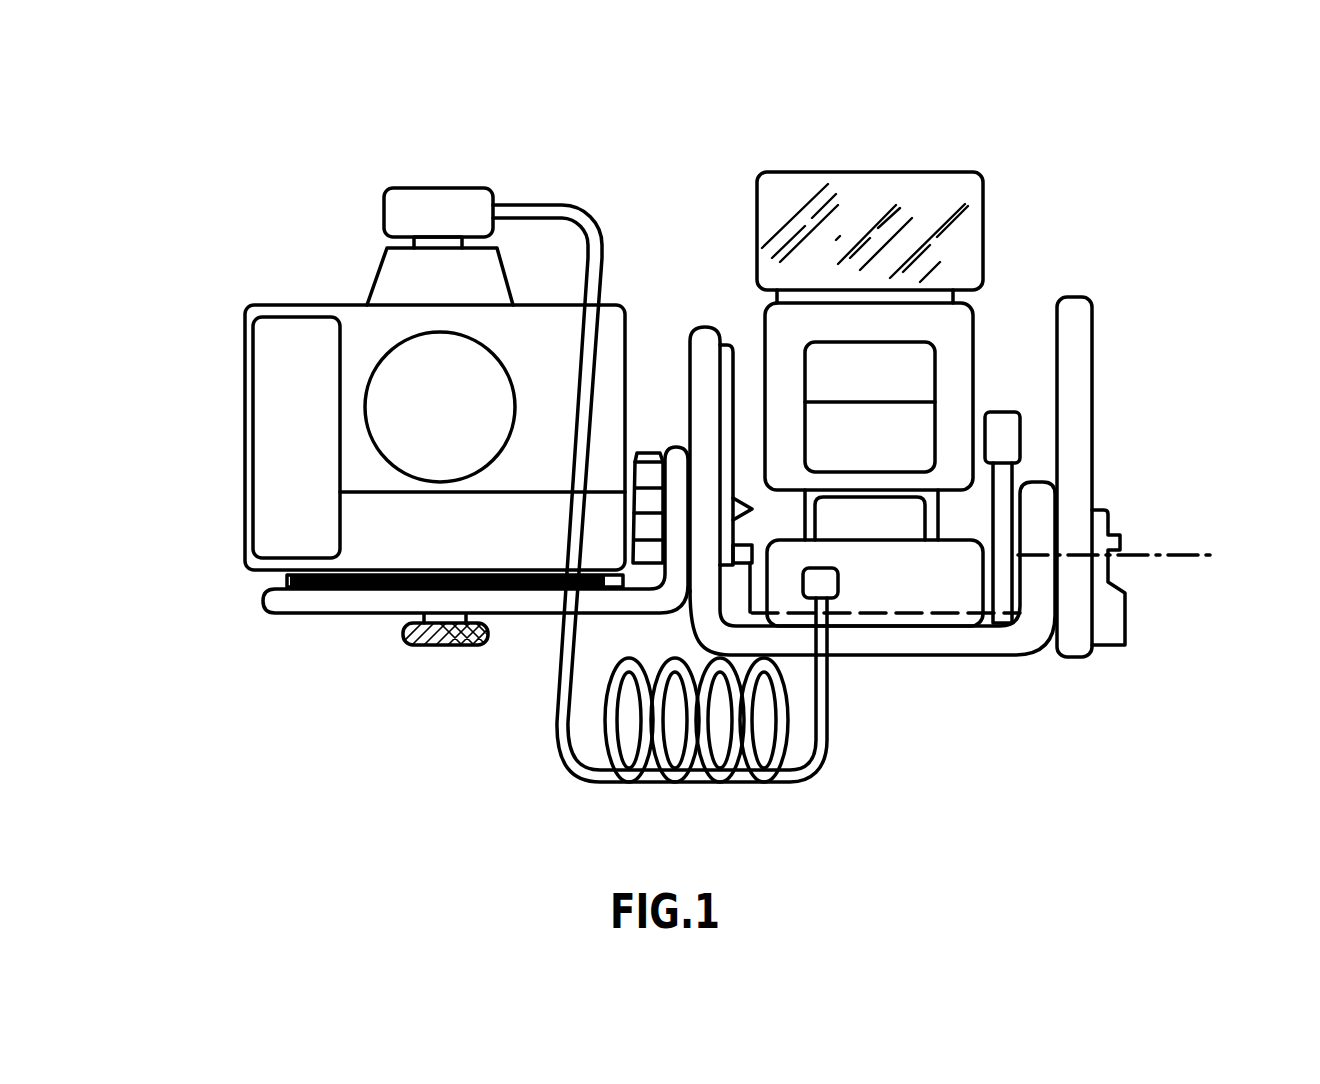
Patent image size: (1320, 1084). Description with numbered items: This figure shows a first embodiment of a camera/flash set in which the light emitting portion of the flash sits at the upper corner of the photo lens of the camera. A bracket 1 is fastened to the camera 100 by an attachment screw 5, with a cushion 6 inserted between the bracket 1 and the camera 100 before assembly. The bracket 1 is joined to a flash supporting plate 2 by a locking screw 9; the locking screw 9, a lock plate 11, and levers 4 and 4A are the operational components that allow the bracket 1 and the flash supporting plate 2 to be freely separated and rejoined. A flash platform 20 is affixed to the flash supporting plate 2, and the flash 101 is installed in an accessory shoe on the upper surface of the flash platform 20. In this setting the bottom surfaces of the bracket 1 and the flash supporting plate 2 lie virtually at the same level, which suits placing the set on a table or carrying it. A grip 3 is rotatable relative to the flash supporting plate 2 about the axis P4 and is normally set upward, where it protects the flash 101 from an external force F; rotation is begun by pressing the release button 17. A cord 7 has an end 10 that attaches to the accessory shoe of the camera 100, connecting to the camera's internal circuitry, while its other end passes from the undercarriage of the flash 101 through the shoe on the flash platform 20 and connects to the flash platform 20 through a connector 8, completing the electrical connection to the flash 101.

The bracket 1 is at (287, 606).
The flash supporting plate 2 is at (920, 640).
The grip 3 is at (1080, 370).
The lever 4 is at (1003, 487).
The lever 4A is at (742, 590).
The attachment screw 5 is at (412, 636).
The cushion 6 is at (288, 581).
The cord 7 is at (828, 735).
The connector 8 is at (827, 587).
The locking screw 9 is at (660, 447).
The end of the cord 10 is at (398, 215).
The lock plate 11 is at (730, 336).
The release button 17 is at (1117, 541).
The flash platform 20 is at (963, 595).
The camera 100 is at (267, 445).
The flash 101 is at (806, 185).
The external force F is at (1104, 304).
The axis P4 is at (1205, 553).